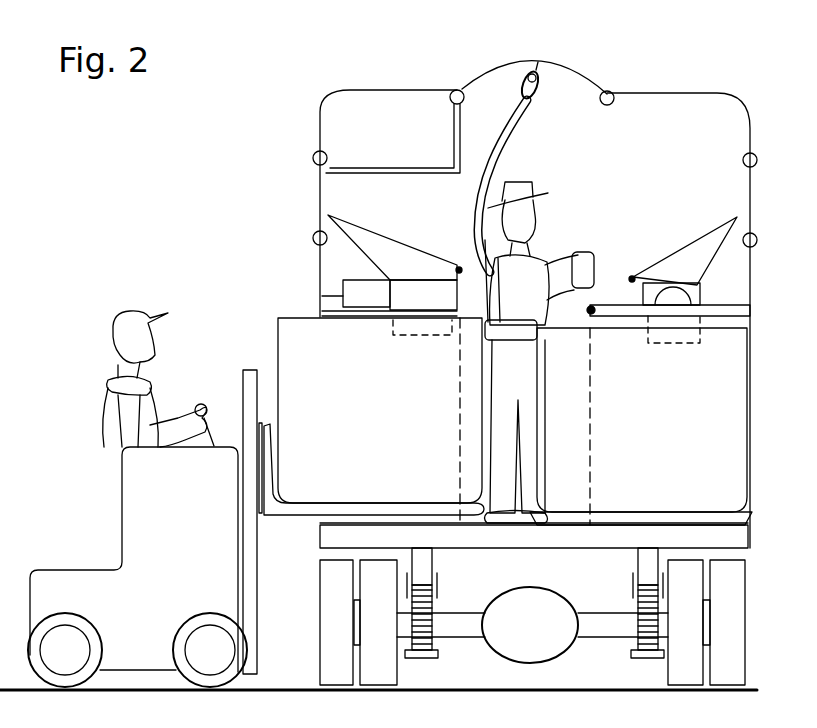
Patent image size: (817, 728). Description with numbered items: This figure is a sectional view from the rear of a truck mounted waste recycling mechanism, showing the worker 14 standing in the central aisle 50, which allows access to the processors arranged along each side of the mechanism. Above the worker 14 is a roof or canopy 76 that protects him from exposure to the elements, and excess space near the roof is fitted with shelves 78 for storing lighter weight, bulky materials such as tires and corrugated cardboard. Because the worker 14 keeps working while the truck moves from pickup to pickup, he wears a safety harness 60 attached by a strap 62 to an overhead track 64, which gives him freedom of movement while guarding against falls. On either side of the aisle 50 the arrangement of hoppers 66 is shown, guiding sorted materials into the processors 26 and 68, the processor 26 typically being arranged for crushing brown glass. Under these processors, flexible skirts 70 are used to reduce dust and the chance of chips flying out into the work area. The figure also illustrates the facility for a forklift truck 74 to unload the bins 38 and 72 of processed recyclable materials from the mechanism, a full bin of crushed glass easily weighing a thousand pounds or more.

The worker 14 is at (470, 228).
The processor 26 is at (705, 290).
The bin 38 is at (750, 360).
The central aisle 50 is at (577, 332).
The safety harness 60 is at (537, 262).
The strap 62 is at (522, 127).
The overhead track 64 is at (548, 66).
The hoppers 66 is at (328, 214).
The processor 68 is at (343, 293).
The flexible skirts 70 is at (393, 326).
The bin 72 is at (278, 336).
The forklift truck 74 is at (72, 565).
The roof or canopy 76 is at (700, 93).
The shelves 78 is at (350, 167).